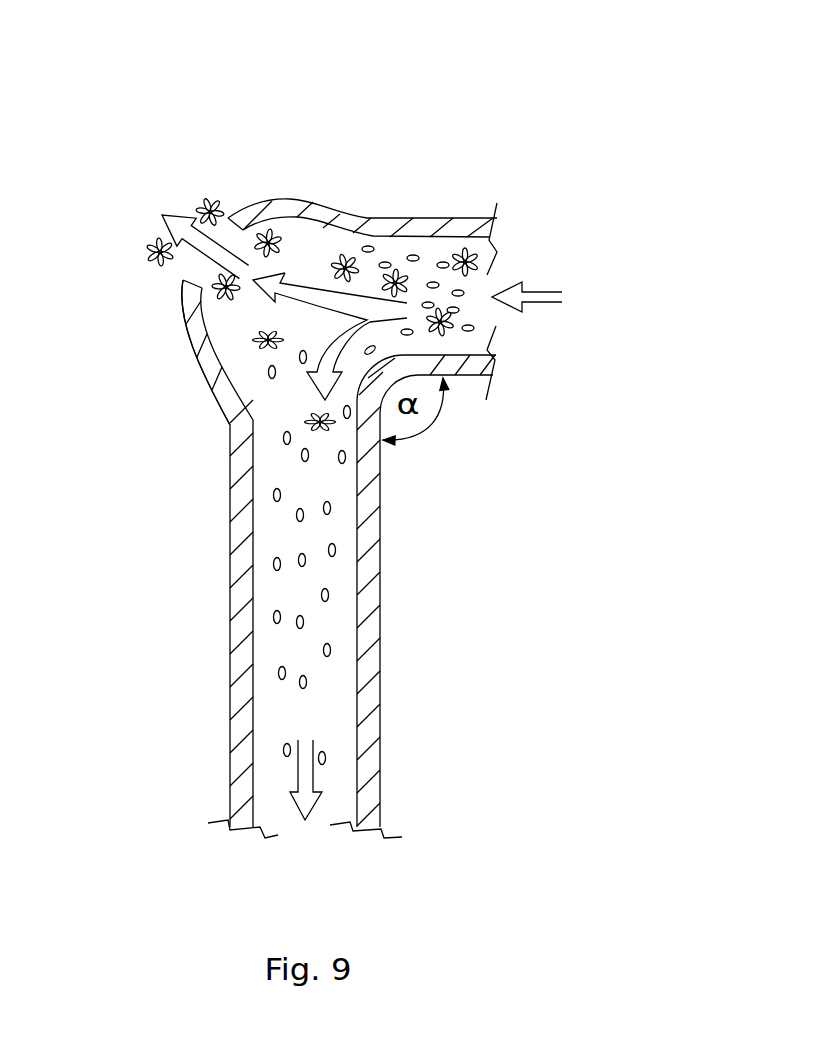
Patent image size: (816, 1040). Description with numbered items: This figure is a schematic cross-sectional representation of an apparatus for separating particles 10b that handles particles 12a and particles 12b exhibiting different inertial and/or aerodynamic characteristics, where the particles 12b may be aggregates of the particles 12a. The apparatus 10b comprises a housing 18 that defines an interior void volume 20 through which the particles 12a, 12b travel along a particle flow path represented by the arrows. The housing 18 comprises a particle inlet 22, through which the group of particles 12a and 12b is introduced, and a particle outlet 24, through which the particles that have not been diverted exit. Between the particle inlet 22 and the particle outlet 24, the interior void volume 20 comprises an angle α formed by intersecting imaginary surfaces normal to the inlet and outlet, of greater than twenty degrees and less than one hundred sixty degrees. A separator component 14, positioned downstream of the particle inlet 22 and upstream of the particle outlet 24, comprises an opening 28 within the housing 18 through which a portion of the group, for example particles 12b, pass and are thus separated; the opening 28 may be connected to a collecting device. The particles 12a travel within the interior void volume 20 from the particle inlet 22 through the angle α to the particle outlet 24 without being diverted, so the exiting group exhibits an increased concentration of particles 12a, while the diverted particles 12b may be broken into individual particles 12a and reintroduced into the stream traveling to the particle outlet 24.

The apparatus for separating particles 10b is at (418, 172).
The particles 12a is at (413, 256).
The particles 12b is at (210, 210).
The separator component 14 is at (168, 297).
The housing 18 is at (316, 206).
The interior void volume 20 is at (335, 487).
The particle inlet 22 is at (502, 270).
The particle outlet 24 is at (303, 833).
The opening 28 is at (187, 268).